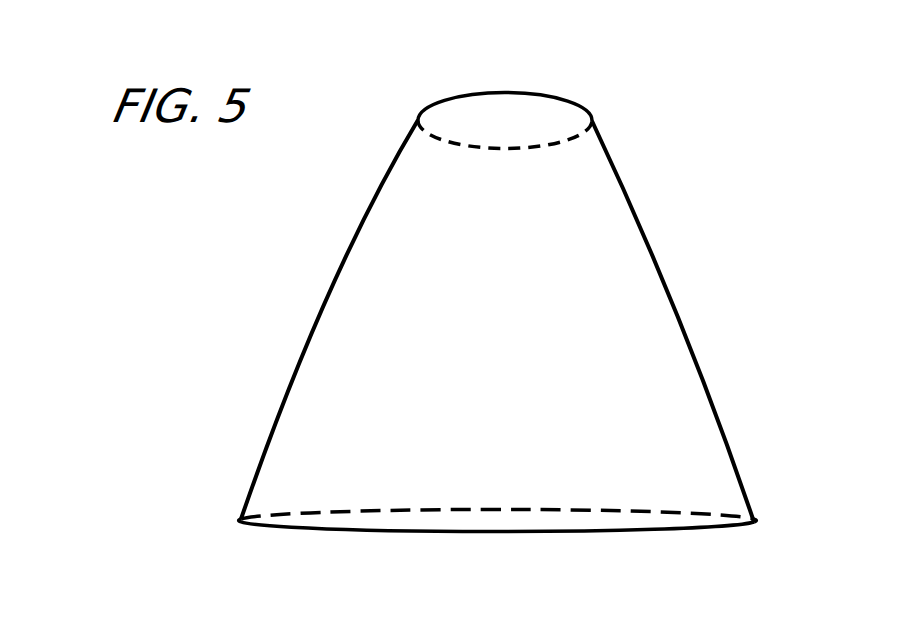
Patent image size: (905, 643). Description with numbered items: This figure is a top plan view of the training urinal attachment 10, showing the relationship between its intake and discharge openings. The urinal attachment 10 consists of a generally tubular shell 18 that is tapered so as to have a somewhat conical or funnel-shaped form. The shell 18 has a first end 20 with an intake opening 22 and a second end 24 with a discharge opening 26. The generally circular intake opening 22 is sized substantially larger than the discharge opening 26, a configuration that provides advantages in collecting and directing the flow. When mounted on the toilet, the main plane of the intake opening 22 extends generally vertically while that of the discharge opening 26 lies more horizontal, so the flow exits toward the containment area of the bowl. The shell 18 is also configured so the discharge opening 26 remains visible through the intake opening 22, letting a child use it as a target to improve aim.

The urinal attachment 10 is at (235, 285).
The shell 18 is at (685, 311).
The first end 20 is at (377, 532).
The intake opening 22 is at (493, 558).
The second end 24 is at (457, 90).
The discharge opening 26 is at (520, 80).